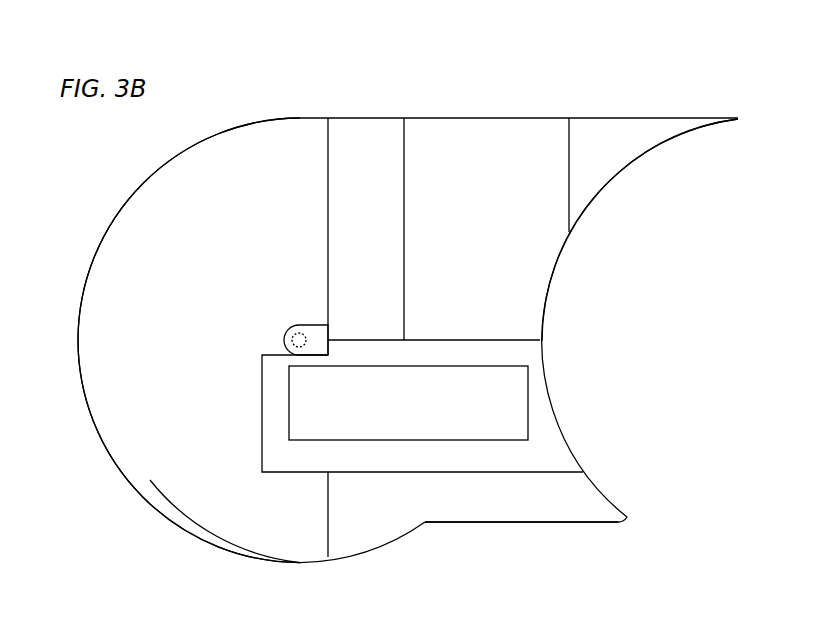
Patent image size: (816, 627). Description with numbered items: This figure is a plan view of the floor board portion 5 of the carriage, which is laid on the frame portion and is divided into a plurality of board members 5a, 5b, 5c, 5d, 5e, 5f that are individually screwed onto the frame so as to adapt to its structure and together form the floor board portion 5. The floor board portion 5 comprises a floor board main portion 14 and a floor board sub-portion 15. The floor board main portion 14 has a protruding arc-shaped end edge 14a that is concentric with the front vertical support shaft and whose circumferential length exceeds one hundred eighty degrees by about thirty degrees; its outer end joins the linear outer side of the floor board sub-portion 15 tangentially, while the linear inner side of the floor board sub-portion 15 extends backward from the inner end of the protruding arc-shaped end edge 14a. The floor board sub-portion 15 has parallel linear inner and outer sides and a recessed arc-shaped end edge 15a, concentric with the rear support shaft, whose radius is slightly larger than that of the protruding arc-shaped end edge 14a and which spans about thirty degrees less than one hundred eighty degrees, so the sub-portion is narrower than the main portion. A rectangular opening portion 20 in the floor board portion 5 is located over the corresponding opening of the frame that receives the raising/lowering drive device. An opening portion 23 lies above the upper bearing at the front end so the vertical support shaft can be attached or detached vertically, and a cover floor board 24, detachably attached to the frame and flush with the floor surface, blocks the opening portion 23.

The floor board portion 5 is at (283, 114).
The board member 5a is at (178, 438).
The board member 5b is at (362, 180).
The board member 5c is at (465, 162).
The board member 5d is at (607, 146).
The board member 5e is at (468, 497).
The board member 5f is at (378, 457).
The floor board main portion 14 is at (184, 352).
The protruding arc-shaped end edge 14a is at (93, 262).
The floor board sub-portion 15 is at (502, 266).
The recessed arc-shaped end edge 15a is at (548, 303).
The rectangular opening portion 20 is at (500, 405).
The opening portion 23 is at (290, 338).
The cover floor board 24 is at (315, 325).